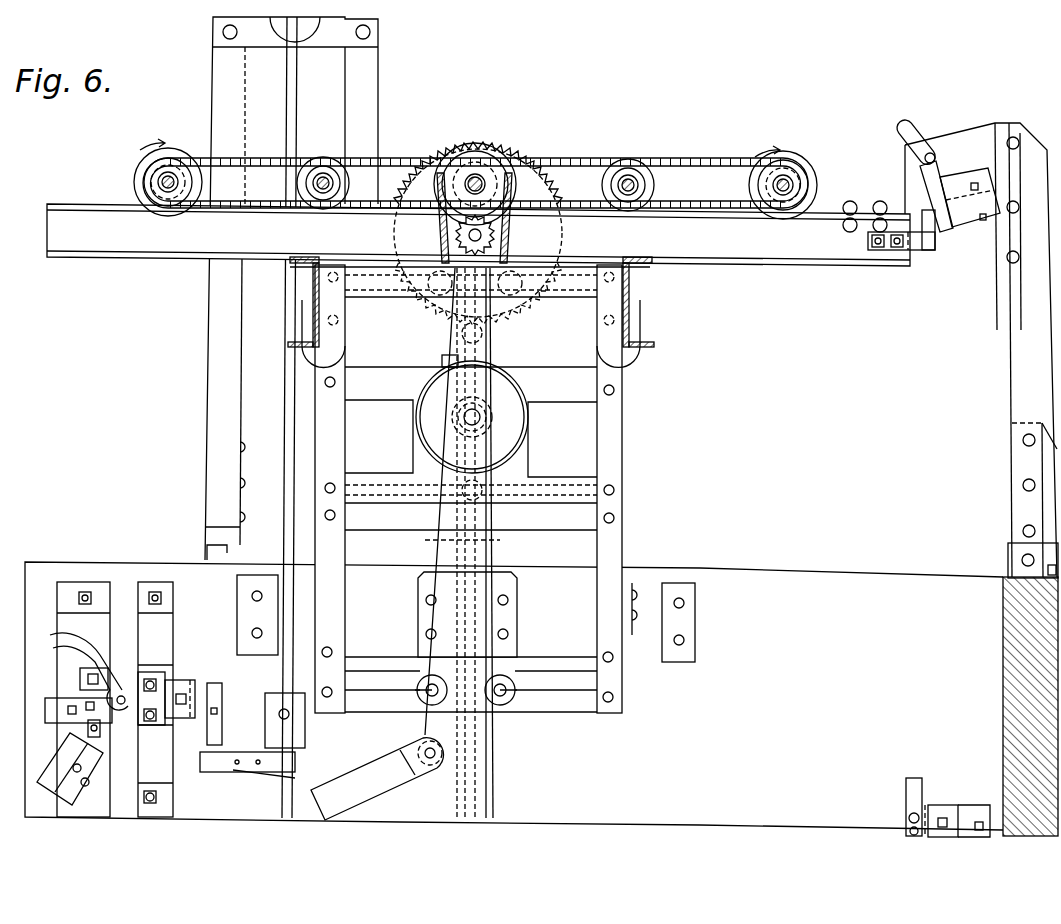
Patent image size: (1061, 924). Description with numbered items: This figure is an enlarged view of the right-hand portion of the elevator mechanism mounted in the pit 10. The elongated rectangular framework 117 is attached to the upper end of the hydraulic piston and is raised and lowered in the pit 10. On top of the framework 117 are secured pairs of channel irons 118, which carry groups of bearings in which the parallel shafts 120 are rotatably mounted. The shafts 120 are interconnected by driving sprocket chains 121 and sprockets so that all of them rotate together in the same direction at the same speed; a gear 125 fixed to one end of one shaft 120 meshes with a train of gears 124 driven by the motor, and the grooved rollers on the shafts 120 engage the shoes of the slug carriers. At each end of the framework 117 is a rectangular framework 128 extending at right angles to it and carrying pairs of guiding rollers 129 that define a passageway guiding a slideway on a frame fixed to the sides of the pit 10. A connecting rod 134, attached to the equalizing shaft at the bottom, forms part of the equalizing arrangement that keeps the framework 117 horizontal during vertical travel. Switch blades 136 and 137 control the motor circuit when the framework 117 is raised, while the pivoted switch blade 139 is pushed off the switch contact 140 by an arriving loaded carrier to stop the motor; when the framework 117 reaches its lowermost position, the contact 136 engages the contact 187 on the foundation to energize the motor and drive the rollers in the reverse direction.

The pit 10 is at (860, 560).
The rectangular framework 117 is at (848, 262).
The channel irons 118 is at (136, 167).
The shaft 120 is at (200, 178).
The driving sprocket chains 121 is at (200, 199).
The train of gears 124 is at (522, 427).
The gear 125 is at (427, 728).
The rectangular framework 128 is at (613, 460).
The guiding rollers 129 is at (432, 305).
The connecting rod 134 is at (392, 786).
The switch blade 136 is at (915, 250).
The switch blade 137 is at (937, 245).
The pivoted switch blade 139 is at (908, 129).
The switch contact 140 is at (960, 225).
The contact 187 is at (922, 786).